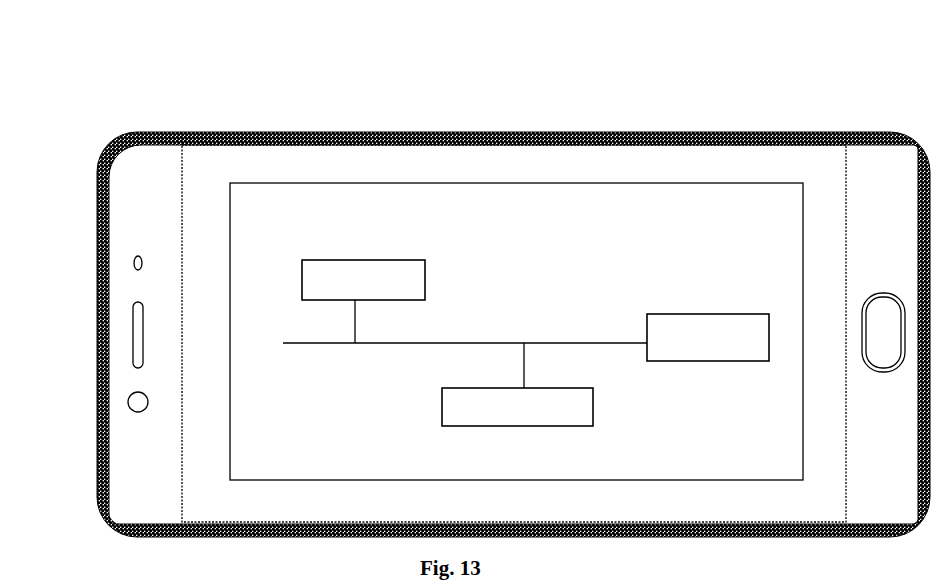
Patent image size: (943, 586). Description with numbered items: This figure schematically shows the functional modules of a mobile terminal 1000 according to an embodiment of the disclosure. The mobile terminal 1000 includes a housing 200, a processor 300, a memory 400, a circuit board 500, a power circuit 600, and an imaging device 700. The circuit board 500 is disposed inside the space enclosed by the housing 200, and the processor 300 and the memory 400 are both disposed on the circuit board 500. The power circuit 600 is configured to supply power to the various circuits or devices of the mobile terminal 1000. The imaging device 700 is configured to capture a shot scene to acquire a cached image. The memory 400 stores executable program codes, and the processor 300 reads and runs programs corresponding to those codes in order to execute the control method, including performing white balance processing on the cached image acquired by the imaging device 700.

The mobile terminal 1000 is at (603, 80).
The housing 200 is at (200, 132).
The imaging device 700 is at (133, 409).
The circuit board 500 is at (321, 343).
The memory 400 is at (355, 260).
The processor 300 is at (697, 314).
The power circuit 600 is at (593, 395).